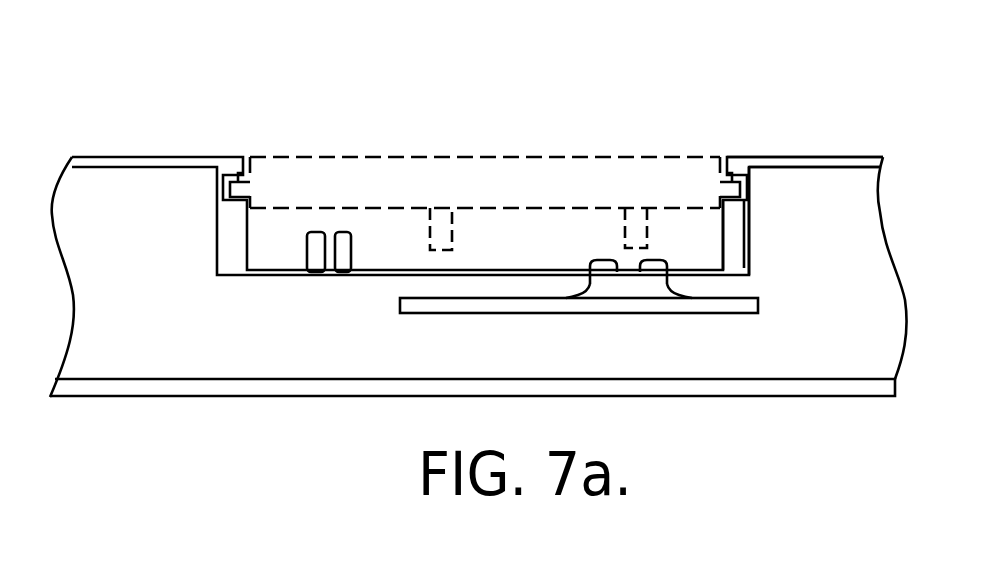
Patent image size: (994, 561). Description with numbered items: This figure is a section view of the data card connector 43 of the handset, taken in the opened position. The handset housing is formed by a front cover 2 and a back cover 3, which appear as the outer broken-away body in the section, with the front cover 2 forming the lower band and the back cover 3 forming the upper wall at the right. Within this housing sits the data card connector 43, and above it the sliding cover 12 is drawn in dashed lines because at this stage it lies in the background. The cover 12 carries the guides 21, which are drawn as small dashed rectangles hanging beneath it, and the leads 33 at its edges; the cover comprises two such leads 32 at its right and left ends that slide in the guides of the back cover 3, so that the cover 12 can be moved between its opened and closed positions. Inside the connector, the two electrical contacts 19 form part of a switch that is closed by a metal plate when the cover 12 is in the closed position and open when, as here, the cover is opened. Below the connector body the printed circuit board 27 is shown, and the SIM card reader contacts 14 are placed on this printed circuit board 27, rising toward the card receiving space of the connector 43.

The data card connector 43 is at (336, 106).
The cover 12 is at (478, 157).
The guides 21 is at (640, 222).
The back cover 3 is at (853, 157).
The leads 33 is at (750, 173).
The leads 32 is at (745, 205).
The electrical contacts 19 is at (316, 252).
The SIM card reader contacts 14 is at (592, 297).
The printed circuit board 27 is at (738, 313).
The front cover 2 is at (833, 395).